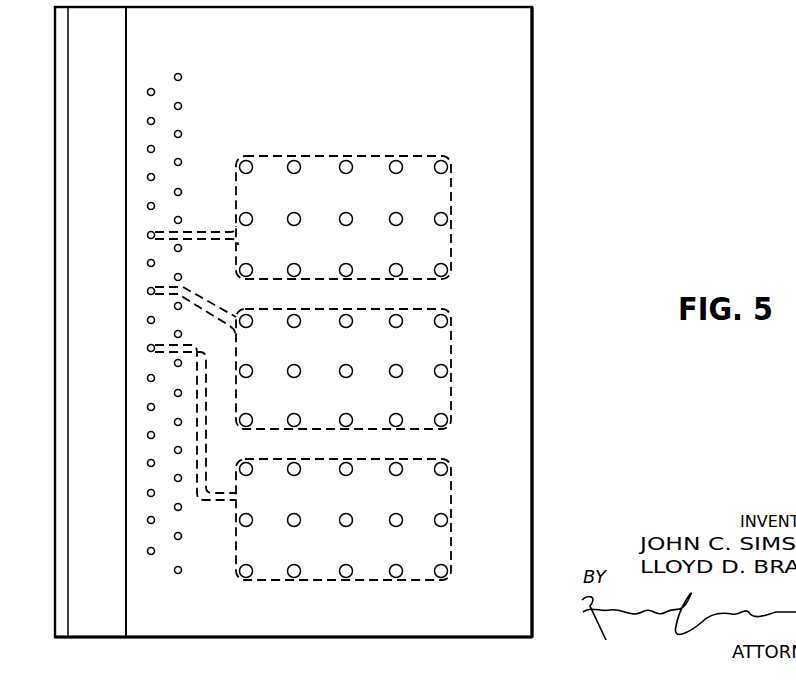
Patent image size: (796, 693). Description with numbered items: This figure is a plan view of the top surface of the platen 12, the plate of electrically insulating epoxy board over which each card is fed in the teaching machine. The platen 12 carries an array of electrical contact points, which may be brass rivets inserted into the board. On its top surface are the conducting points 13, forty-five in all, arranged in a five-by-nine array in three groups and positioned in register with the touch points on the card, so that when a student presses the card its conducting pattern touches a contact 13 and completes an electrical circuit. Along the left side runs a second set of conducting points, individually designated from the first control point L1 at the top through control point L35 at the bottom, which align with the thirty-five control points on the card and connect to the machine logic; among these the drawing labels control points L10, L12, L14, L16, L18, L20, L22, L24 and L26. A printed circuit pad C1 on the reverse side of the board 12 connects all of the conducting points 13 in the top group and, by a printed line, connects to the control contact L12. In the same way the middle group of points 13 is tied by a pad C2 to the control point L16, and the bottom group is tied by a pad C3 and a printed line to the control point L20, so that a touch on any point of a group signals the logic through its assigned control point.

The platen 12 is at (524, 82).
The electrical contact points 13 is at (448, 219).
The printed circuit pad C1 is at (452, 192).
The printed circuit pad C2 is at (452, 328).
The printed circuit pad C3 is at (452, 478).
The control point L1 is at (176, 73).
The control point L10 is at (148, 206).
The control contact L12 is at (148, 235).
The control point L14 is at (148, 263).
The control point L16 is at (148, 291).
The control point L18 is at (148, 320).
The control point L20 is at (148, 348).
The control point L22 is at (148, 378).
The control point L24 is at (148, 407).
The control point L26 is at (148, 435).
The control point L35 is at (176, 574).